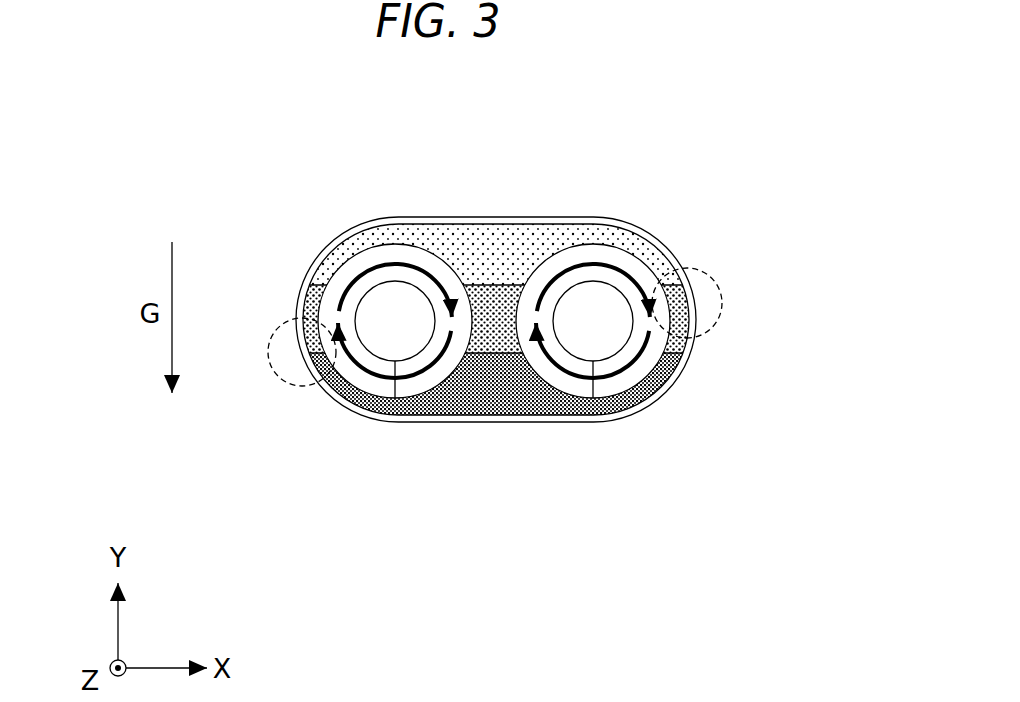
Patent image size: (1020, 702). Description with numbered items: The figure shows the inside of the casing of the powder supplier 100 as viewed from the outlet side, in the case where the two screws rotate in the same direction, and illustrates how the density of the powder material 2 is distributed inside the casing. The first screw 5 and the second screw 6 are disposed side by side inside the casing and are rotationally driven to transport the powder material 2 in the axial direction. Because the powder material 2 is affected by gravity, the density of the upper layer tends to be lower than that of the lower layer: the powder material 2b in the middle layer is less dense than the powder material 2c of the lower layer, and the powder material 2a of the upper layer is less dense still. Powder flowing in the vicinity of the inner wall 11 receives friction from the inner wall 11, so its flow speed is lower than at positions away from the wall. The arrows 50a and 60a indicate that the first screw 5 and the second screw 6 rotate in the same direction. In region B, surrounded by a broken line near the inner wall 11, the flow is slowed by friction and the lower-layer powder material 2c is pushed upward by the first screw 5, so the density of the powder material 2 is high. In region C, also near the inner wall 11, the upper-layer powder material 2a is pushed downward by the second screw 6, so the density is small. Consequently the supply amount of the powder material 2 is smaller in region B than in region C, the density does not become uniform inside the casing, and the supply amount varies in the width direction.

The powder supplier 100 is at (628, 125).
The powder material 2 is at (496, 341).
The powder material of the upper layer 2a is at (511, 263).
The powder material in the middle layer 2b is at (490, 327).
The powder material of the lower layer 2c is at (567, 503).
The first screw 5 is at (355, 261).
The second screw 6 is at (643, 260).
The inner wall 11 is at (465, 230).
The rotation direction of the first screw 50a is at (352, 278).
The rotation direction of the second screw 60a is at (638, 277).
The region B is at (287, 382).
The region C is at (722, 303).